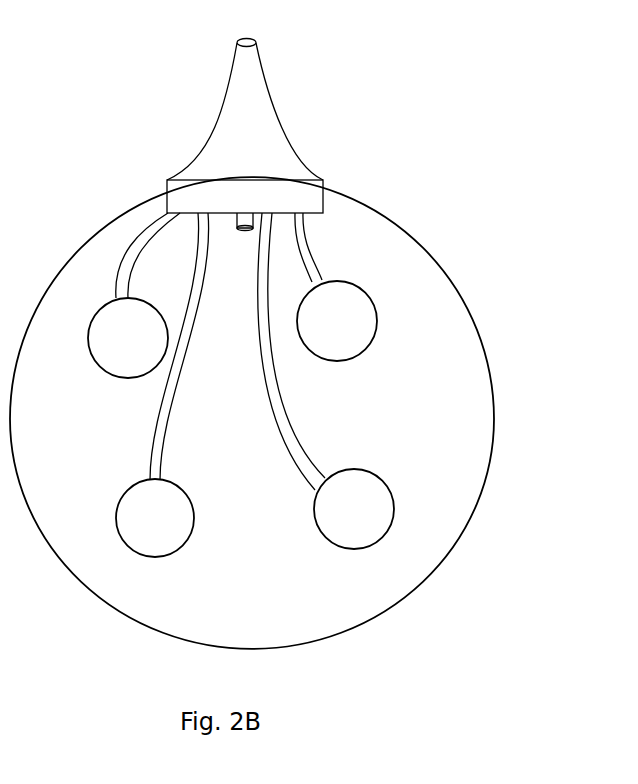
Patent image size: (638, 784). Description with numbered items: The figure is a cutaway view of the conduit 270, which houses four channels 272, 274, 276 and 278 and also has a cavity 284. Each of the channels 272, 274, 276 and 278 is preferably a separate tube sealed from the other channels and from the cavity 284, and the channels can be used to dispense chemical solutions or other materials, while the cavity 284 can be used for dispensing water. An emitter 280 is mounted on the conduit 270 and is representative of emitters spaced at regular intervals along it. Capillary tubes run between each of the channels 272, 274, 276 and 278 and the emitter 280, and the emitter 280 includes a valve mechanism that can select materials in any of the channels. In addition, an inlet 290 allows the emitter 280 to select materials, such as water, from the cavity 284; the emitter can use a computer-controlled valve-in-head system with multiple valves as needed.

The conduit 270 is at (402, 232).
The channel 272 is at (149, 350).
The channel 274 is at (358, 333).
The channel 276 is at (176, 530).
The channel 278 is at (375, 521).
The emitter 280 is at (290, 143).
The cavity 284 is at (269, 587).
The inlet 290 is at (237, 228).